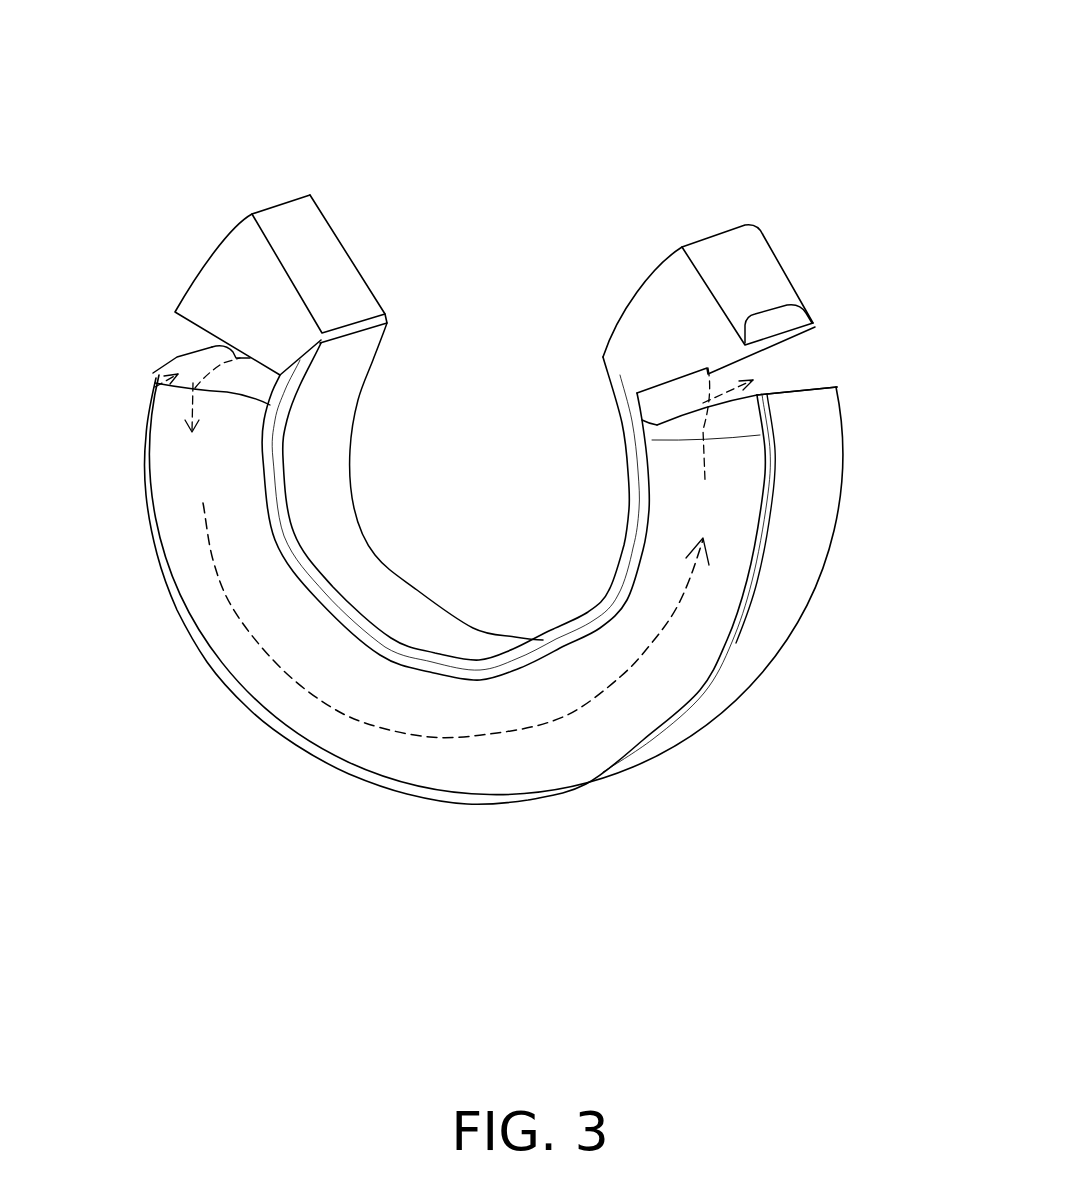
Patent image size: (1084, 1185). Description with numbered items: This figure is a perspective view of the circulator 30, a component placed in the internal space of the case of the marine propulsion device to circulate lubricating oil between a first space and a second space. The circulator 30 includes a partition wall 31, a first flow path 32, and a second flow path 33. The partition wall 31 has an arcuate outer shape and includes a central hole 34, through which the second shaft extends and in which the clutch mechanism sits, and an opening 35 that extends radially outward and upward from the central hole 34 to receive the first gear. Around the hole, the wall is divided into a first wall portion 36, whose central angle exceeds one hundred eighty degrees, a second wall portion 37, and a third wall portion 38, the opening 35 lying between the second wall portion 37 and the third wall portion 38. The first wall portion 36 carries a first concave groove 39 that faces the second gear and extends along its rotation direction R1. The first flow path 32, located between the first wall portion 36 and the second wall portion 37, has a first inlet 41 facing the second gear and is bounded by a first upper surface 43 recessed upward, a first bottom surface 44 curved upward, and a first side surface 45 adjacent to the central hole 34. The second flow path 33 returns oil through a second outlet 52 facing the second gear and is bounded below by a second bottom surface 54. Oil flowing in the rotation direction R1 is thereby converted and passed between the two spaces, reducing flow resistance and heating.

The circulator 30 is at (198, 145).
The partition wall 31 is at (539, 812).
The first flow path 32 is at (805, 357).
The second flow path 33 is at (181, 336).
The central hole 34 is at (330, 463).
The opening 35 is at (525, 225).
The first wall portion 36 is at (285, 740).
The second wall portion 37 is at (727, 260).
The third wall portion 38 is at (297, 240).
The first concave groove 39 is at (460, 763).
The first inlet 41 is at (647, 427).
The first upper surface 43 is at (778, 323).
The first bottom surface 44 is at (763, 387).
The first side surface 45 is at (668, 402).
The second outlet 52 is at (153, 387).
The second bottom surface 54 is at (188, 362).
The rotation direction of the second gear R1 is at (370, 723).